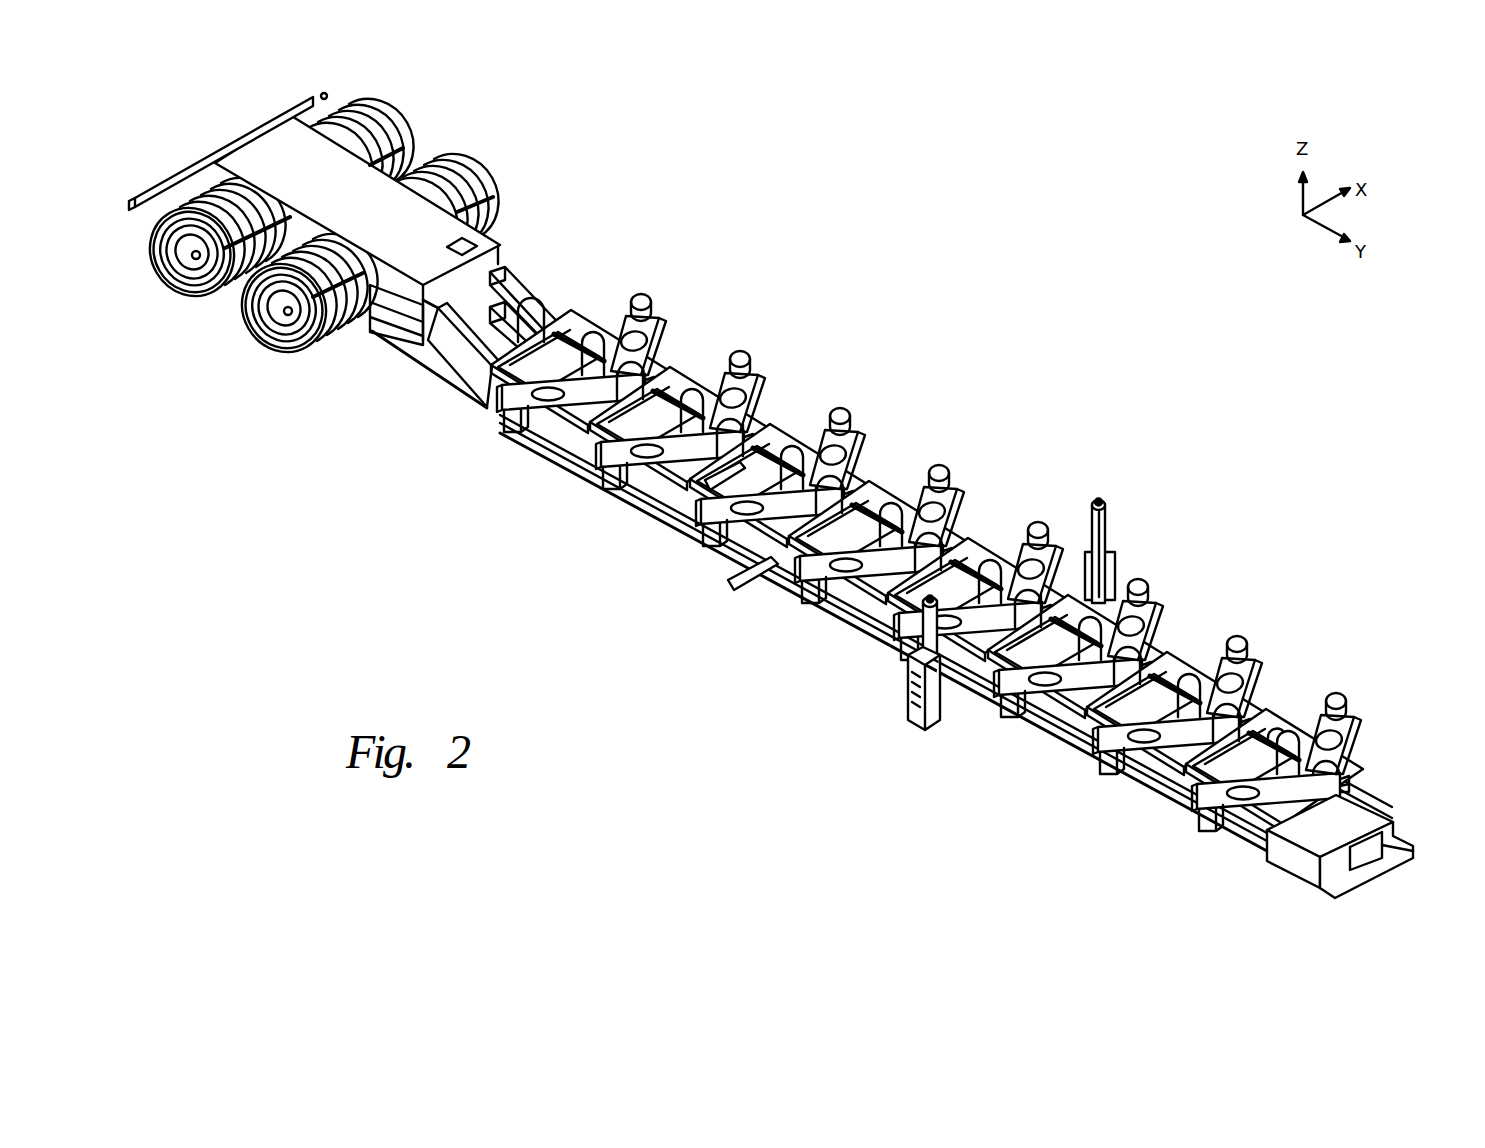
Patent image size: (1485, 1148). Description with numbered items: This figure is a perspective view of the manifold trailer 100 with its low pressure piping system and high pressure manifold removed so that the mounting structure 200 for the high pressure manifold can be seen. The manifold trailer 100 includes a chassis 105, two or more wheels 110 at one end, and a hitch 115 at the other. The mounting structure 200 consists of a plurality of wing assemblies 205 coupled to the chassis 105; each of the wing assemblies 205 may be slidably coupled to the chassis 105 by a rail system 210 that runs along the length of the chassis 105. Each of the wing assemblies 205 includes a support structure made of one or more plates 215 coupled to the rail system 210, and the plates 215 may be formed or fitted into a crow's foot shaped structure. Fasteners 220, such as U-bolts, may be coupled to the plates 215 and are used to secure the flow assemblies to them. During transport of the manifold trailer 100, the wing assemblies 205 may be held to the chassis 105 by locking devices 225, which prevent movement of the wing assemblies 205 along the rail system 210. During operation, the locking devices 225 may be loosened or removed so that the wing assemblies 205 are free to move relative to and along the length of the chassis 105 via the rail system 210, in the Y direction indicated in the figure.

The manifold trailer 100 is at (1024, 263).
The chassis 105 is at (452, 393).
The wheels 110 is at (198, 299).
The hitch 115 is at (1400, 843).
The mounting structure 200 is at (935, 550).
The wing assemblies 205 is at (664, 331).
The rail system 210 is at (1279, 726).
The plates 215 is at (715, 512).
The fasteners 220 is at (868, 642).
The locking devices 225 is at (558, 445).